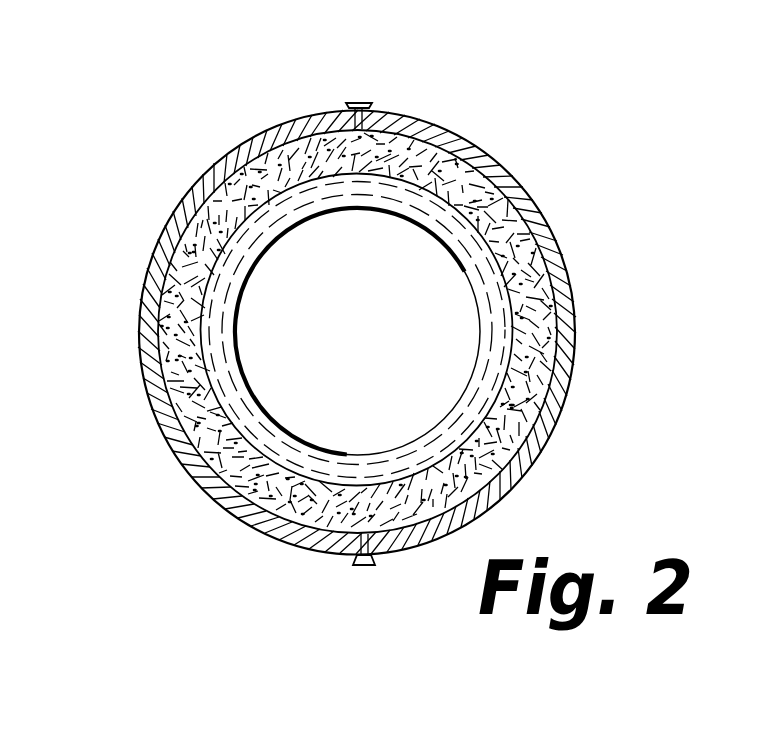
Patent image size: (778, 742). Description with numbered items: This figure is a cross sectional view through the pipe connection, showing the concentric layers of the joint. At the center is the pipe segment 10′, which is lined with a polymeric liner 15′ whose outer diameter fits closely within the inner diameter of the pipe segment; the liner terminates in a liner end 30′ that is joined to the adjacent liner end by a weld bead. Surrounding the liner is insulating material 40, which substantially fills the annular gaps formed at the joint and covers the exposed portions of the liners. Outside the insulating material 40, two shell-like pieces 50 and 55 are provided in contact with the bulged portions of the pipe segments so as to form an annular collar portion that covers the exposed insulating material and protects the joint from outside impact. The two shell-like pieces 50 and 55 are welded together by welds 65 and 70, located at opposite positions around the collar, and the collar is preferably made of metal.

The pipe segment 10′ is at (177, 265).
The polymeric liner 15′ is at (282, 212).
The liner end 30′ is at (352, 208).
The insulating material 40 is at (525, 298).
The shell-like piece 50 is at (195, 198).
The shell-like piece 55 is at (515, 184).
The weld 65 is at (362, 105).
The weld 70 is at (362, 565).